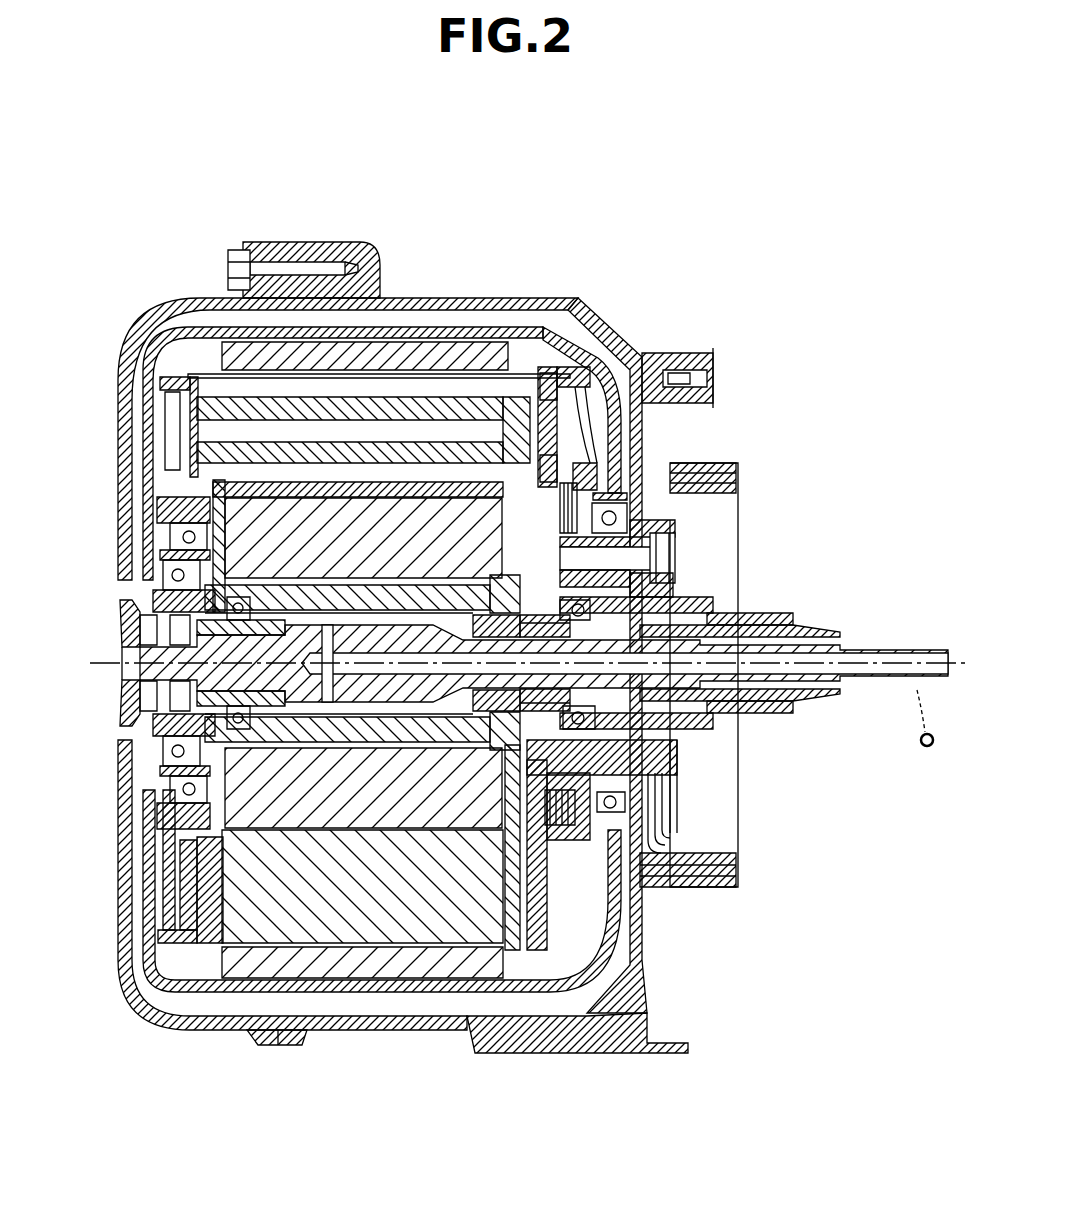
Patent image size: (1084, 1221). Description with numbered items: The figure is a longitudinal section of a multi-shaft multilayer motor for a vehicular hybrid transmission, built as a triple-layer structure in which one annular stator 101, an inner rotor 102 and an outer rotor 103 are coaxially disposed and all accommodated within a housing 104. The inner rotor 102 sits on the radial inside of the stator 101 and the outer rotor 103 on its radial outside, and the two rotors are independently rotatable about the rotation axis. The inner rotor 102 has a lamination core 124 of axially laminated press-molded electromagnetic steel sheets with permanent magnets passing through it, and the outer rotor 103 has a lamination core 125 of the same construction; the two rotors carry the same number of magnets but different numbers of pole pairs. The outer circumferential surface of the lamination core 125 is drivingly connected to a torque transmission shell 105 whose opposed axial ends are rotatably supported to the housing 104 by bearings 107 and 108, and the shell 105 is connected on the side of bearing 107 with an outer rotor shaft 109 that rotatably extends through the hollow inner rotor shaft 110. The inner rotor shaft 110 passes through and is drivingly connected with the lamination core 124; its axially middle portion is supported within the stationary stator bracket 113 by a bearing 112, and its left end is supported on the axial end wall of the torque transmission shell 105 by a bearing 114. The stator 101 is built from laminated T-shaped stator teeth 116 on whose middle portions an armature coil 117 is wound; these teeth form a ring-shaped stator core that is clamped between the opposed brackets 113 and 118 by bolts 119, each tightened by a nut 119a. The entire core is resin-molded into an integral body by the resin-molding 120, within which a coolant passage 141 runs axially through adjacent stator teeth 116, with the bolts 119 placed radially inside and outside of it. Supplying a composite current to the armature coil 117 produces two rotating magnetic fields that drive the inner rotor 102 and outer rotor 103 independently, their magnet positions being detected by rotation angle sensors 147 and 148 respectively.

The stator 101 is at (462, 345).
The inner rotor 102 is at (370, 830).
The outer rotor 103 is at (400, 332).
The housing 104 is at (622, 326).
The torque transmission shell 105 is at (505, 360).
The bearing 107 is at (160, 567).
The bearing 108 is at (648, 520).
The outer rotor shaft 109 is at (913, 645).
The inner rotor shaft 110 is at (690, 707).
The bearing 112 is at (660, 592).
The stator bracket 113 is at (562, 340).
The bearing 114 is at (130, 615).
The stator teeth 116 is at (447, 907).
The armature coil 117 is at (210, 940).
The bracket 118 is at (172, 377).
The bolts 119 is at (315, 470).
The nut 119a is at (195, 408).
The resin-molding 120 is at (143, 377).
The lamination core 124 is at (548, 960).
The lamination core 125 is at (457, 368).
The coolant passage 141 is at (210, 330).
The rotation angle sensor 147 is at (125, 707).
The rotation angle sensor 148 is at (620, 870).